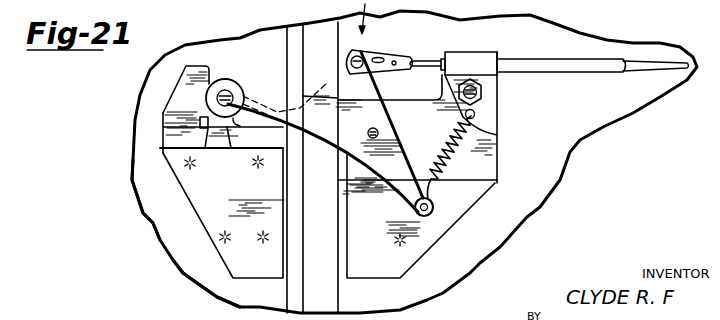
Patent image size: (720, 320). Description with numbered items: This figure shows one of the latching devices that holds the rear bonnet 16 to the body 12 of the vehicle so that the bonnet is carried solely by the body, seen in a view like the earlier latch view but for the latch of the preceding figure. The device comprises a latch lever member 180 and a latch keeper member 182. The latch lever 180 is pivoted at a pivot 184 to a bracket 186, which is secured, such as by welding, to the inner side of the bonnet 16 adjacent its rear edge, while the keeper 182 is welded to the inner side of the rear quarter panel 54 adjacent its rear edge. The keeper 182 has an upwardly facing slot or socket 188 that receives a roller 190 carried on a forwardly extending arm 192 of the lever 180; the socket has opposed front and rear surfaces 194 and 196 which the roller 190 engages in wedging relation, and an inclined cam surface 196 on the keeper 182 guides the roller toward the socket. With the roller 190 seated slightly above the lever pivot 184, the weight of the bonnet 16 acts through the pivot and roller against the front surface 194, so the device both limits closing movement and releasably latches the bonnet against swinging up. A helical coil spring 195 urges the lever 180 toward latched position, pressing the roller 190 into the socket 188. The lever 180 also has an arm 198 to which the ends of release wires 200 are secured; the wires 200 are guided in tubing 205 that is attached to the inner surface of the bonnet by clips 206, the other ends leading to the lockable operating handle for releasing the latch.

The body 12 is at (183, 273).
The body rear end extension or bonnet 16 is at (577, 147).
The rear quarter panels 54 is at (163, 220).
The latch lever member 180 is at (340, 147).
The latch keeper member 182 is at (172, 99).
The pivot 184 is at (367, 133).
The bracket 186 is at (496, 164).
The slot or socket 188 is at (227, 149).
The roller 190 is at (222, 80).
The forwardly extending arm 192 is at (267, 93).
The front surface 194 is at (207, 150).
The helical coil spring 195 is at (470, 138).
The rear surface / inclined cam surface 196 is at (310, 96).
The arm 198 is at (342, 72).
The release wires 200 is at (432, 59).
The tubing 205 is at (592, 62).
The clips 206 is at (482, 58).